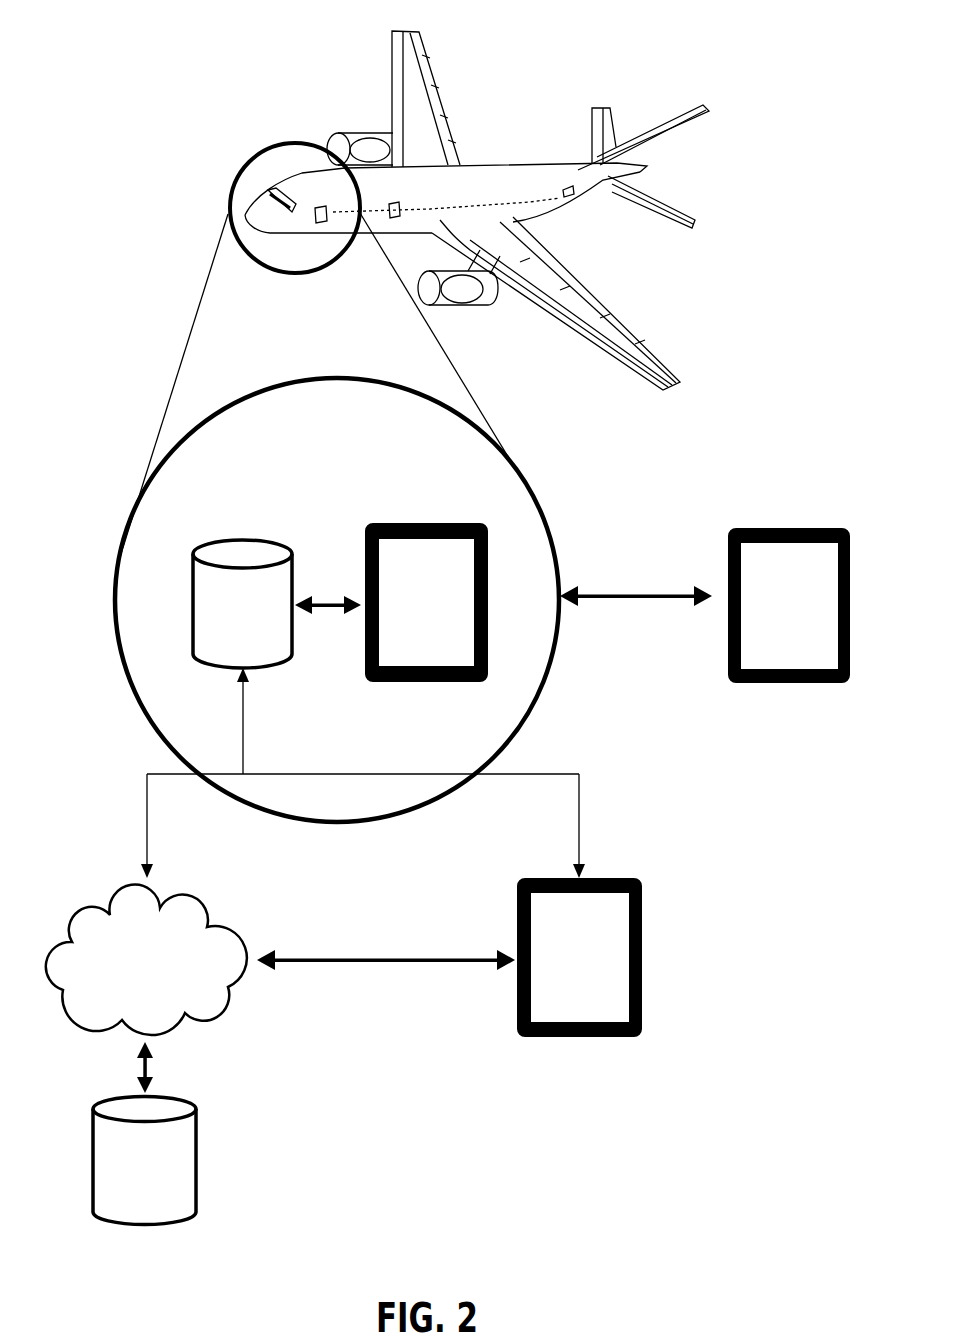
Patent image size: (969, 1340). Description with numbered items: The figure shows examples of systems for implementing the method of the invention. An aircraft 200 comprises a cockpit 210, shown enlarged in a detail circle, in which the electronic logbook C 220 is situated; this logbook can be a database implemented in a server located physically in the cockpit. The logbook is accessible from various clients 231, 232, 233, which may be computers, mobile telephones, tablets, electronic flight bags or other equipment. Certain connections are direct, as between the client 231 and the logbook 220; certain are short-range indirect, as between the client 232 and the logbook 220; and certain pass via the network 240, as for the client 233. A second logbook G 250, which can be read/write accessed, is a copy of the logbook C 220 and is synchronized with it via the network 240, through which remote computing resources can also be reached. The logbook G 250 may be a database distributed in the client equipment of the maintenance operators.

The aircraft 200 is at (450, 37).
The cockpit 210 is at (246, 164).
The logbook C 220 is at (237, 530).
The client 231 is at (433, 517).
The client 232 is at (782, 517).
The client 233 is at (613, 865).
The network 240 is at (172, 892).
The second logbook G 250 is at (207, 1132).